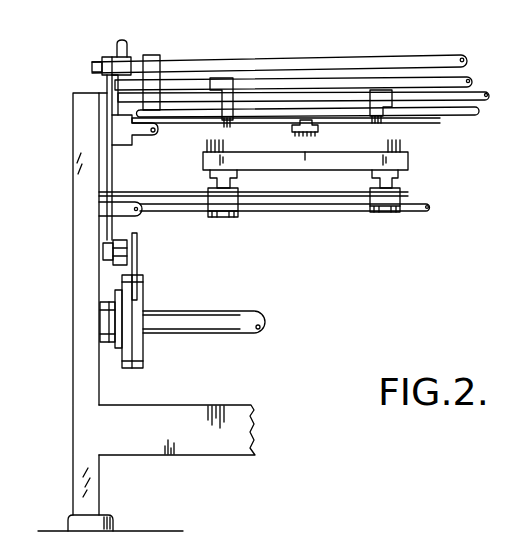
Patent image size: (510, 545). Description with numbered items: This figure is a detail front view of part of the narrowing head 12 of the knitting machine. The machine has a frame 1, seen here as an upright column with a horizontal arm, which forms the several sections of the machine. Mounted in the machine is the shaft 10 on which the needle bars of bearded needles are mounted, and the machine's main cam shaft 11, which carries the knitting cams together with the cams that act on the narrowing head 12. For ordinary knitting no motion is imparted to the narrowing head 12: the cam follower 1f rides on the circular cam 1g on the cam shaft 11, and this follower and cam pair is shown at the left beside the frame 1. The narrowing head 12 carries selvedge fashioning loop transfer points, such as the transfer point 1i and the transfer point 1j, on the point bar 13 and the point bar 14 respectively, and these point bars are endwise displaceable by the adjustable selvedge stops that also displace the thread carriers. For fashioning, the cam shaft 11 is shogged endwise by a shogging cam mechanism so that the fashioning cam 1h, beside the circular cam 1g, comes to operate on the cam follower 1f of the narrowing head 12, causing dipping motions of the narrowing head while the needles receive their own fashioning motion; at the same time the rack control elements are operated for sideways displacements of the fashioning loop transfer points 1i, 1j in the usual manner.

The frame 1 is at (85, 427).
The cam follower 1f is at (115, 238).
The circular cam 1g is at (137, 293).
The fashioning cam 1h is at (127, 313).
The selvedge fashioning loop transfer point 1i is at (232, 127).
The selvedge fashioning loop transfer point 1j is at (384, 122).
The shaft 10 is at (300, 202).
The main cam shaft 11 is at (238, 310).
The narrowing head 12 is at (183, 62).
The point bar 13 is at (242, 83).
The point bar 14 is at (278, 100).